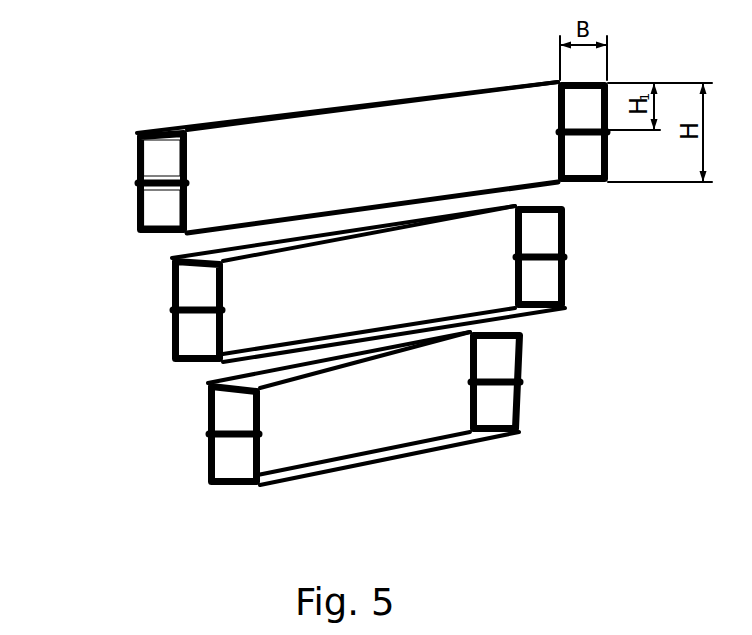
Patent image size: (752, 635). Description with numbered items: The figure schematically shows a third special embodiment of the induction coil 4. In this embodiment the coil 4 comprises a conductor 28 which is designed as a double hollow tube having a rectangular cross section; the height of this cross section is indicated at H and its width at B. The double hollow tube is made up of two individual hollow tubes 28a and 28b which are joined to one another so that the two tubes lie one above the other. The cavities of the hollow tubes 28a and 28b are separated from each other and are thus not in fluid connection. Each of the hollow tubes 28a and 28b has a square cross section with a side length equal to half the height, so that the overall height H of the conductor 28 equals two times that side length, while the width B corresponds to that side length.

The conductor 28 is at (218, 128).
The hollow tube 28a is at (138, 175).
The hollow tube 28b is at (138, 208).
The coil 4 is at (86, 410).